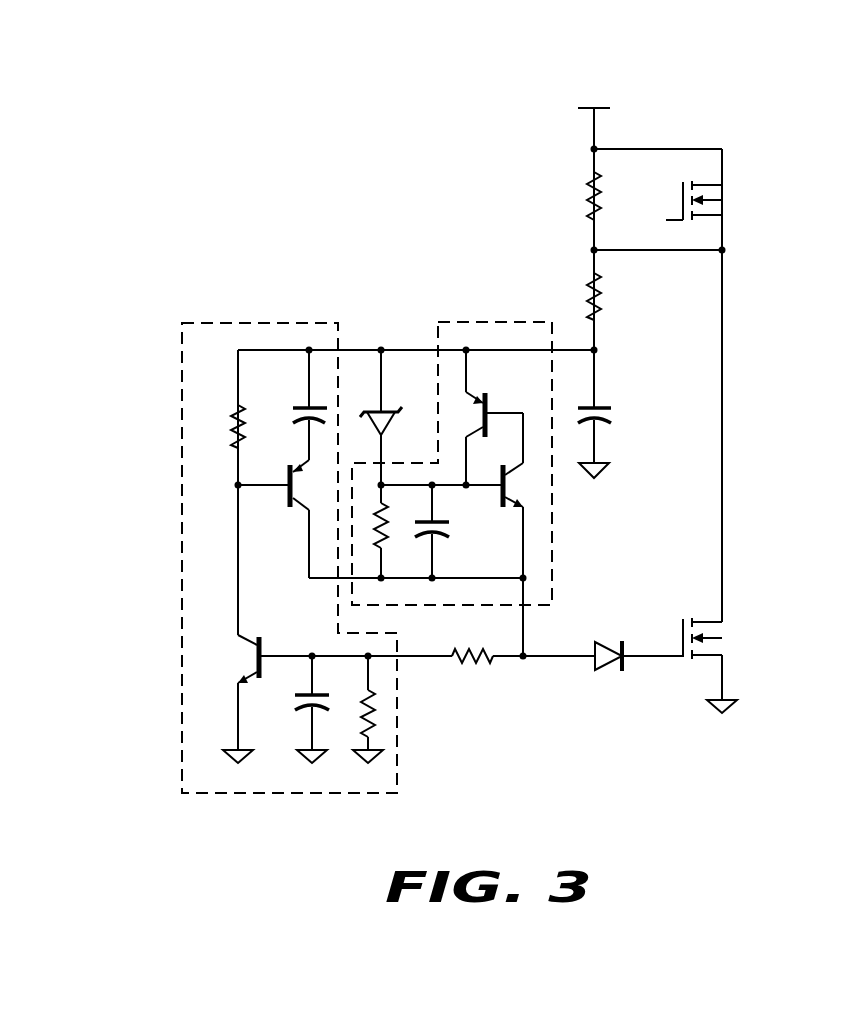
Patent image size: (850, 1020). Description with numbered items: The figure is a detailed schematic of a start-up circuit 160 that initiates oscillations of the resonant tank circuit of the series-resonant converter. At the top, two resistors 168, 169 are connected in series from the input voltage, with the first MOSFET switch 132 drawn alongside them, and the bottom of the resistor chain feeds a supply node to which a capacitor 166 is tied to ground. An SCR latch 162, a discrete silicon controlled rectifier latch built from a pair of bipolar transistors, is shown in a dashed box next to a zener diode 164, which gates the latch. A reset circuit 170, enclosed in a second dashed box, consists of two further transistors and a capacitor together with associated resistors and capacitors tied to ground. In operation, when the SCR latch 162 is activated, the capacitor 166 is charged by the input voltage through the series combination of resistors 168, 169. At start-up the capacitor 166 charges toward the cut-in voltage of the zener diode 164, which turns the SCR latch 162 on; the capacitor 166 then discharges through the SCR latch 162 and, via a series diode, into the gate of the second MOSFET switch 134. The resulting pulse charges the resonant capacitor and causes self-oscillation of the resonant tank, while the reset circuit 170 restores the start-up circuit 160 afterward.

The first MOSFET switch 132 is at (722, 149).
The second MOSFET switch 134 is at (728, 622).
The start-up circuit 160 is at (492, 431).
The SCR latch 162 is at (463, 322).
The zener diode 164 is at (401, 423).
The capacitor 166 is at (612, 417).
The resistor 168 is at (583, 200).
The resistor 169 is at (583, 299).
The reset circuit 170 is at (212, 322).